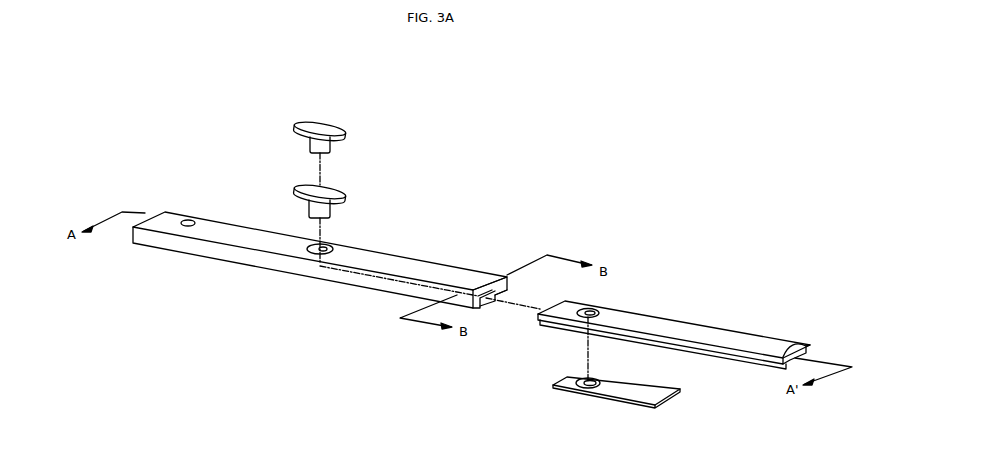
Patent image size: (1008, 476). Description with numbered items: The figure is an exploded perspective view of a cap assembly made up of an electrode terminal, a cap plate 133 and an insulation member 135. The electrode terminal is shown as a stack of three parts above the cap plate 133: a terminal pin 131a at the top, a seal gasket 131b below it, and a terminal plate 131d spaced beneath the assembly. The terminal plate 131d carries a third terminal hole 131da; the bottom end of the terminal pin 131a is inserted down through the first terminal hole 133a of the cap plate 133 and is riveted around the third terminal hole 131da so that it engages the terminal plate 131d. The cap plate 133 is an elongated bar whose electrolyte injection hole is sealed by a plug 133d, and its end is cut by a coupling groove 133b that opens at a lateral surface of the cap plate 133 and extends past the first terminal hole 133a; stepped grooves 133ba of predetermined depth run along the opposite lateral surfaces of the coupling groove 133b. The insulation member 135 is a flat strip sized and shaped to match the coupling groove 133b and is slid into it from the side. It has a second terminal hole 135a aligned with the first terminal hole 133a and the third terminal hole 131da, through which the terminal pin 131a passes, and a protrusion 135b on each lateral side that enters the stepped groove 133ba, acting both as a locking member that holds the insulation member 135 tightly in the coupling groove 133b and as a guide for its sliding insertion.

The terminal pin 131a is at (331, 143).
The seal gasket 131b is at (331, 209).
The terminal plate 131d is at (632, 391).
The third terminal hole 131da is at (583, 393).
The cap plate 133 is at (406, 265).
The first terminal hole 133a is at (324, 251).
The coupling groove 133b is at (485, 298).
The stepped grooves 133ba is at (500, 285).
The plug 133d is at (189, 220).
The insulation member 135 is at (707, 333).
The second terminal hole 135a is at (600, 310).
The protrusion 135b is at (785, 343).